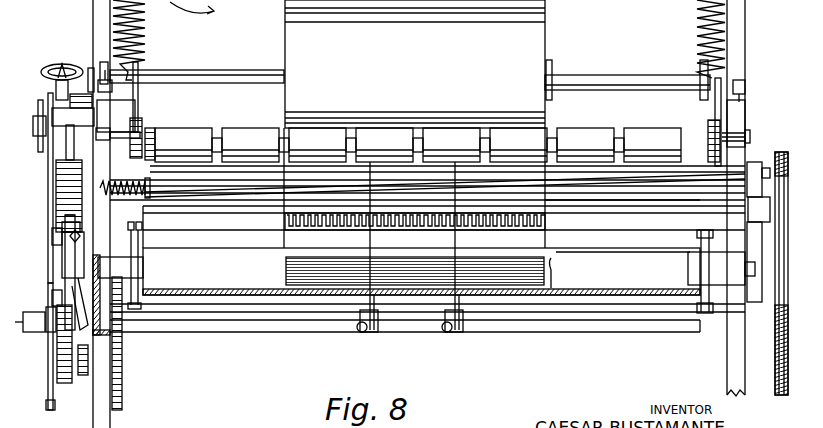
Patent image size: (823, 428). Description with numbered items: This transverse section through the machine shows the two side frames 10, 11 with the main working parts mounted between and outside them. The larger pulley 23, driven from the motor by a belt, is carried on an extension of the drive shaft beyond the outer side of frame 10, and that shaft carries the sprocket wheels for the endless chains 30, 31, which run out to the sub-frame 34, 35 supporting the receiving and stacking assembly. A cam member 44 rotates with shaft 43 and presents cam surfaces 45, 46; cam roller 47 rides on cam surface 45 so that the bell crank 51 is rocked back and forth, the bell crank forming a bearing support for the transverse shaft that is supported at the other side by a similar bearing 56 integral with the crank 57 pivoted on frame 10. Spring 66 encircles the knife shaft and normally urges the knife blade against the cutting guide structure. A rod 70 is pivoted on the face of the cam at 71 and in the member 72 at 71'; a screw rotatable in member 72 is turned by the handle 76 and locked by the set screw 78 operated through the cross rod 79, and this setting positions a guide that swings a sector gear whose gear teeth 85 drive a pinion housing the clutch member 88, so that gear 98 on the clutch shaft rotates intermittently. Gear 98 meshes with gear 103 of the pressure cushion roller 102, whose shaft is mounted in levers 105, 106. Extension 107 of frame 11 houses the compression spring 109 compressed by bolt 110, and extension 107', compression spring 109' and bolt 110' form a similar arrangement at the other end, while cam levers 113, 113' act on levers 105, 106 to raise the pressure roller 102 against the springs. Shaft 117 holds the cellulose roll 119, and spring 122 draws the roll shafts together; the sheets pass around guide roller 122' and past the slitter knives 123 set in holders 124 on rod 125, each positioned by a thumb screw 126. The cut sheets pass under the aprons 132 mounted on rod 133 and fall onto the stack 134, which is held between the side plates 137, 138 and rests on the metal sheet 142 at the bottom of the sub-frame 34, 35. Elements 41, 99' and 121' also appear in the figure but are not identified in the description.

The side frame 10 is at (746, 33).
The side frame 11 is at (95, 14).
The pulley 23 is at (776, 342).
The endless chain 30 is at (694, 316).
The endless chain 31 is at (160, 313).
The sub-frame 34 is at (690, 258).
The sub-frame 35 is at (150, 260).
The rack 41 is at (122, 400).
The shaft 43 is at (58, 330).
The cam member 44 is at (48, 364).
The cam surface 45 is at (48, 408).
The cam surface 46 is at (66, 383).
The cam roller 47 is at (56, 226).
The bell crank 51 is at (62, 270).
The bearing 56 is at (753, 220).
The crank 57 is at (752, 243).
The spring 66 is at (125, 177).
The rod 70 is at (51, 254).
The pivot 71 is at (40, 297).
The pivot 71' is at (40, 237).
The member 72 is at (48, 194).
The handle 76 is at (50, 68).
The set screw 78 is at (33, 134).
The cross rod 79 is at (39, 112).
The gear teeth 85 is at (89, 68).
The clutch member 88 is at (51, 175).
The gear 98 is at (142, 228).
The rail 99' is at (622, 222).
The pressure cushion roller 102 is at (606, 134).
The gear 103 is at (178, 127).
The lever 105 is at (140, 122).
The lever 106 is at (708, 136).
The extension 107 is at (134, 110).
The extension 107' is at (762, 123).
The compression spring 109 is at (79, 149).
The compression spring 109' is at (760, 135).
The bolt 110 is at (138, 69).
The bolt 110' is at (760, 86).
The cam lever 113 is at (172, 97).
The cam lever 113' is at (697, 122).
The shaft 117 is at (622, 76).
The cellulose roll 119 is at (546, 46).
The connector 121' is at (250, 127).
The spring 122 is at (419, 40).
The guide roller 122' is at (622, 342).
The slitter knife 123 is at (376, 302).
The knife holder 124 is at (370, 334).
The rod 125 is at (310, 325).
The thumb screw 126 is at (360, 330).
The apron 132 is at (285, 218).
The rod 133 is at (640, 214).
The stack 134 is at (484, 272).
The side plate 137 is at (280, 278).
The side plate 138 is at (552, 268).
The metal sheet 142 is at (648, 296).